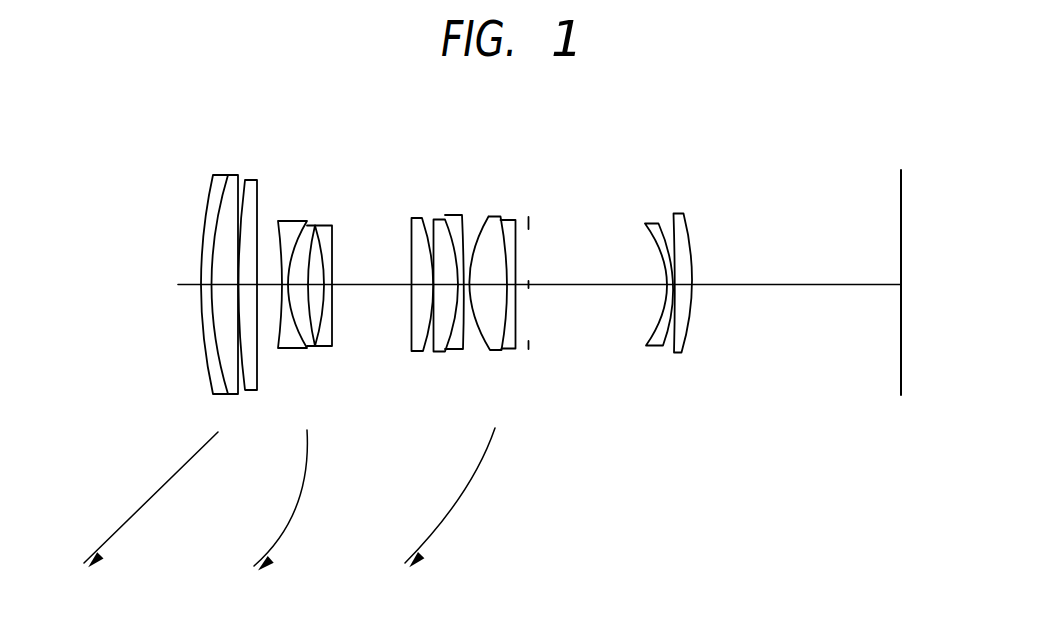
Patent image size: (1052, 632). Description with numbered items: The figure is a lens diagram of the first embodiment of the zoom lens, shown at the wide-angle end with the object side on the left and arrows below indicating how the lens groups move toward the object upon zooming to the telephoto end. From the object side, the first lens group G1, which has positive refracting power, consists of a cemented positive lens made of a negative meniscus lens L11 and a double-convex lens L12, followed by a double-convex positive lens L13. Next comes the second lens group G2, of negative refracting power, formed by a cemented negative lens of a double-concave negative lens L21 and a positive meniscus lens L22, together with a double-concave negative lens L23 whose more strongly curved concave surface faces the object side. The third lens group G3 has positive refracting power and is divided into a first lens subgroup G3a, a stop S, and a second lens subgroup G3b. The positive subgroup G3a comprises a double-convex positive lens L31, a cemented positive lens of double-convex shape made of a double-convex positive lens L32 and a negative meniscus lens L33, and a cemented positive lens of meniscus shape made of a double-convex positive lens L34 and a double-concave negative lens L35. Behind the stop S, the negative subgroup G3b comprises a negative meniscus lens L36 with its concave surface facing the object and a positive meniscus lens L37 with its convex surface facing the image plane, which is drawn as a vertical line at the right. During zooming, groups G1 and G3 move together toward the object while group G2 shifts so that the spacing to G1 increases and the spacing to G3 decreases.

The first lens group G1 is at (268, 170).
The second lens group G2 is at (343, 217).
The third lens group G3 is at (692, 144).
The first lens subgroup G3a is at (524, 217).
The second lens subgroup G3b is at (708, 215).
The negative meniscus lens L11 is at (213, 382).
The double-convex lens L12 is at (232, 381).
The double-convex positive lens L13 is at (253, 380).
The double-concave negative lens L21 is at (290, 342).
The positive meniscus lens L22 is at (308, 343).
The double-concave negative lens L23 is at (328, 342).
The double-convex positive lens L31 is at (418, 325).
The double-convex positive lens L32 is at (436, 353).
The negative meniscus lens L33 is at (455, 353).
The double-convex positive lens L34 is at (497, 352).
The double-concave negative lens L35 is at (512, 353).
The negative meniscus lens L36 is at (656, 344).
The positive meniscus lens L37 is at (682, 345).
The stop S is at (530, 226).